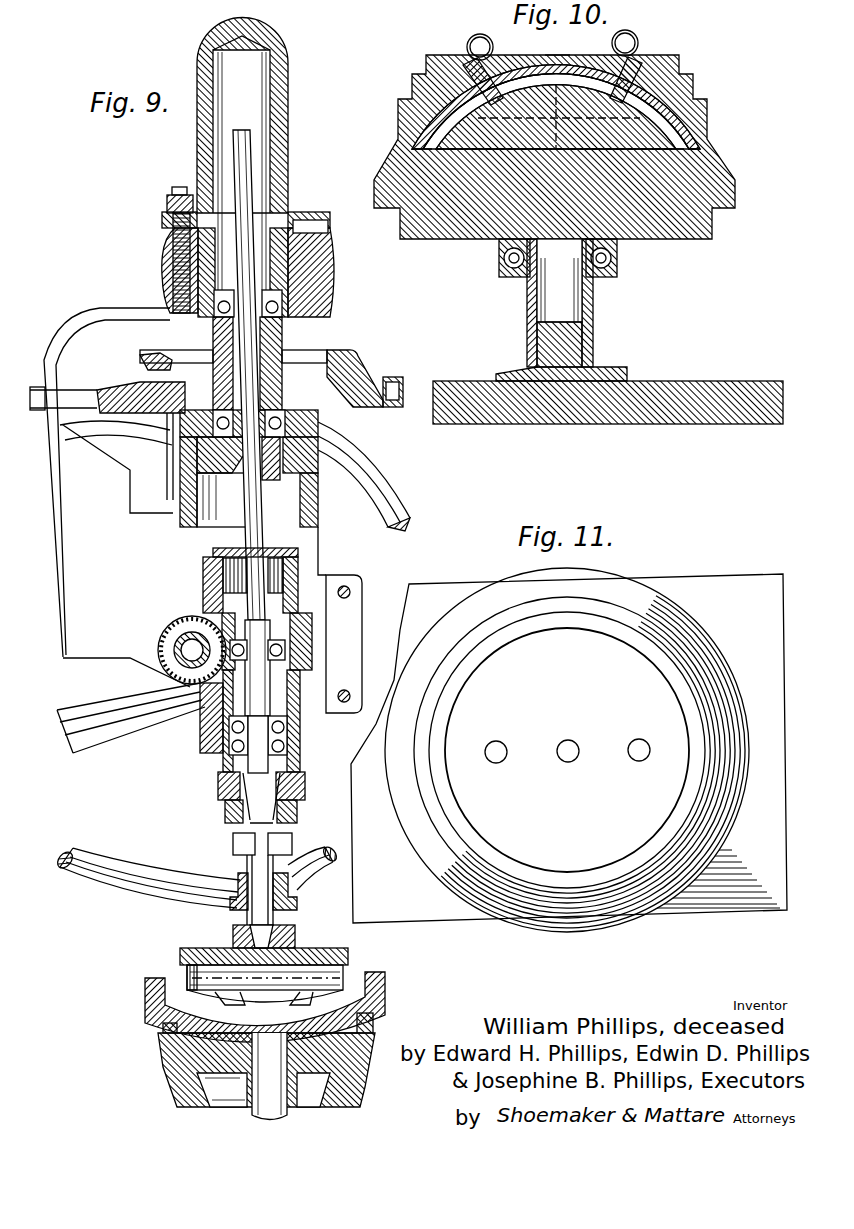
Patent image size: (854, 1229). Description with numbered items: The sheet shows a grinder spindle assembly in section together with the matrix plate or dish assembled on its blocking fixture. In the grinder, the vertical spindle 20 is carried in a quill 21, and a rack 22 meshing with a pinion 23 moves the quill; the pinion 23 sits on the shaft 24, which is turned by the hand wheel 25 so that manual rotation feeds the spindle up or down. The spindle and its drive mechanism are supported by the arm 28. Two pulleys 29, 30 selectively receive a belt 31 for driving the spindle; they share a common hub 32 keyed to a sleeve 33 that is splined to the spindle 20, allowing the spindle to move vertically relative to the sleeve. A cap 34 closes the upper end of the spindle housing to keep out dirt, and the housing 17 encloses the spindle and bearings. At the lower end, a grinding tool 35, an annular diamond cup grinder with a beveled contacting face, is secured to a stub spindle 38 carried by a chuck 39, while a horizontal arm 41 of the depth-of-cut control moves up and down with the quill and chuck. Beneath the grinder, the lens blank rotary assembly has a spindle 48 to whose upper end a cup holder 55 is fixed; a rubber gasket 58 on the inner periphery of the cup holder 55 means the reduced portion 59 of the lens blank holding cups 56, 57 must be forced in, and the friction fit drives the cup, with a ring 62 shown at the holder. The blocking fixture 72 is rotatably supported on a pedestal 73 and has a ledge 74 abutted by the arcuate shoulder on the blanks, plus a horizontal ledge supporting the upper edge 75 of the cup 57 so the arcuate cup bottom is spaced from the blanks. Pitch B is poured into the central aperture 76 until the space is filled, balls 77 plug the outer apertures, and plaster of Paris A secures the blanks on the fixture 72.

In FIG. 9, the spindle housing 17 is at (205, 568).
In FIG. 9, the vertical spindle 20 is at (258, 516).
In FIG. 9, the quill 21 is at (222, 770).
In FIG. 9, the rack 22 is at (213, 707).
In FIG. 9, the pinion 23 is at (188, 622).
In FIG. 9, the shaft 24 is at (170, 640).
In FIG. 9, the hand wheel 25 is at (394, 528).
In FIG. 9, the arm 28 is at (115, 498).
In FIG. 9, the pulley 29 is at (350, 352).
In FIG. 9, the pulley 30 is at (391, 382).
In FIG. 9, the belt 31 is at (412, 376).
In FIG. 9, the common hub 32 is at (215, 398).
In FIG. 9, the sleeve 33 is at (282, 335).
In FIG. 9, the cap 34 is at (288, 140).
In FIG. 9, the grinding tool 35 is at (200, 958).
In FIG. 9, the stub spindle 38 is at (283, 913).
In FIG. 9, the chuck 39 is at (297, 813).
In FIG. 9, the horizontal arm 41 is at (220, 797).
In FIG. 9, the spindle 48 is at (278, 1118).
In FIG. 9, the cup holder 55 is at (375, 1085).
In FIG. 9, the lens blank holding cup 56 is at (385, 990).
In FIG. 10, the lens blank holding cup 57 is at (697, 122).
In FIG. 11, the lens blank holding cup 57 is at (592, 927).
In FIG. 9, the rubber gasket 58 is at (373, 1033).
In FIG. 9, the reduced portion 59 is at (373, 1022).
In FIG. 9, the ring 62 is at (185, 967).
In FIG. 10, the blocking fixture 72 is at (737, 193).
In FIG. 11, the blocking fixture 72 is at (534, 928).
In FIG. 10, the pedestal 73 is at (593, 336).
In FIG. 10, the ledge 74 is at (678, 102).
In FIG. 10, the upper edge 75 is at (411, 149).
In FIG. 10, the central aperture 76 is at (554, 55).
In FIG. 11, the central aperture 76 is at (572, 742).
In FIG. 10, the balls 77 is at (485, 33).
In FIG. 10, the plaster of Paris A is at (448, 222).
In FIG. 10, the pitch B is at (423, 124).